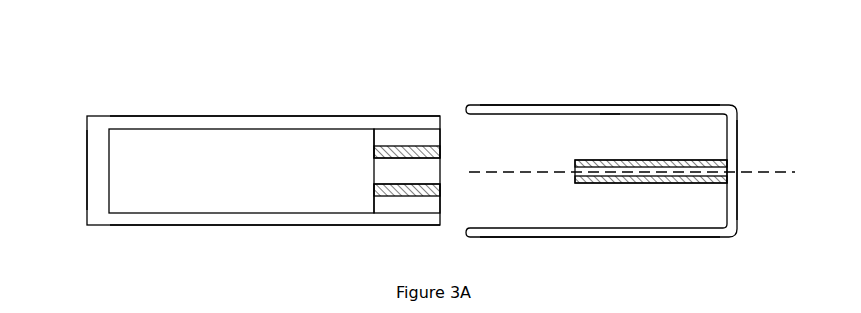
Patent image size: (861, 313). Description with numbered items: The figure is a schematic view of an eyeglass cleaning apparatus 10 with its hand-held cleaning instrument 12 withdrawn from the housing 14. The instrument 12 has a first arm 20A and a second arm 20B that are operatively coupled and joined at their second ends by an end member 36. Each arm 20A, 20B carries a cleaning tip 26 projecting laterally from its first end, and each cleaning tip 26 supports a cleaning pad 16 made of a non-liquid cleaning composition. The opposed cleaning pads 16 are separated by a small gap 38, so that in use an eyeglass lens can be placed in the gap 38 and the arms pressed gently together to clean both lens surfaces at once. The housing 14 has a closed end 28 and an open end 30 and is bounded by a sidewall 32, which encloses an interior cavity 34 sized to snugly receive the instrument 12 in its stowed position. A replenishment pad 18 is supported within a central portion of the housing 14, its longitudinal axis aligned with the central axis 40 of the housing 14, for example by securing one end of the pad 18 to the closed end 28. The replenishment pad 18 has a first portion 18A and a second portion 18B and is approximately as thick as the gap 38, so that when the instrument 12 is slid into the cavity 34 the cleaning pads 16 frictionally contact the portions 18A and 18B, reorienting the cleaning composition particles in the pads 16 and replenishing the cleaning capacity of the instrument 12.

The eyeglass cleaning apparatus 10 is at (460, 66).
The hand-held cleaning instrument 12 is at (86, 104).
The housing 14 is at (739, 104).
The cleaning pad 16 is at (374, 153).
The replenishment pad 18 is at (691, 168).
The first portion of replenishment pad 18A is at (635, 160).
The second portion of replenishment pad 18B is at (635, 183).
The first arm 20A is at (265, 116).
The second arm 20B is at (242, 225).
The cleaning tip 26 is at (423, 138).
The closed end 28 is at (737, 145).
The open end 30 is at (470, 142).
The sidewall 32 is at (597, 237).
The interior cavity 34 is at (602, 132).
The end member 36 is at (87, 176).
The gap 38 is at (408, 171).
The central axis 40 is at (787, 170).